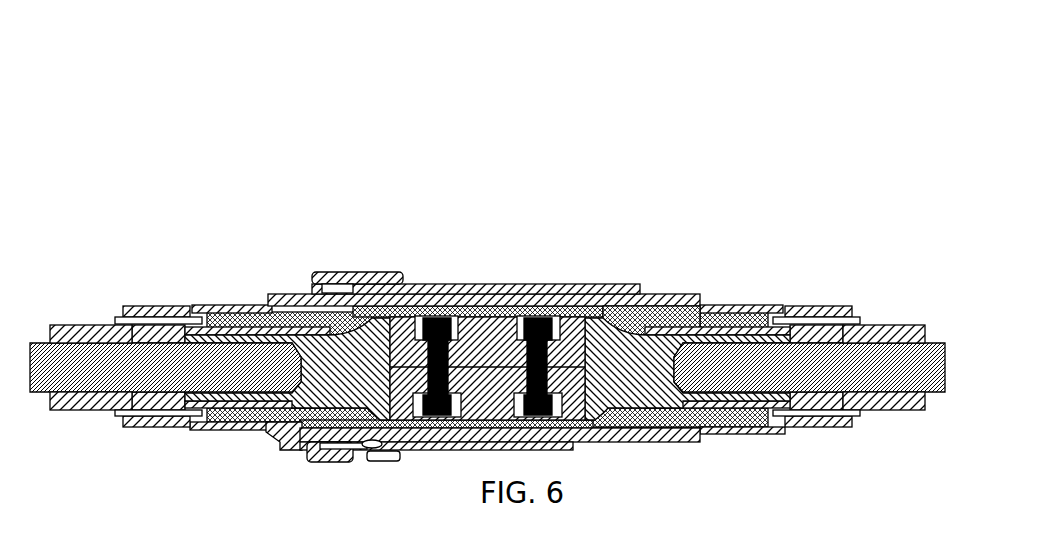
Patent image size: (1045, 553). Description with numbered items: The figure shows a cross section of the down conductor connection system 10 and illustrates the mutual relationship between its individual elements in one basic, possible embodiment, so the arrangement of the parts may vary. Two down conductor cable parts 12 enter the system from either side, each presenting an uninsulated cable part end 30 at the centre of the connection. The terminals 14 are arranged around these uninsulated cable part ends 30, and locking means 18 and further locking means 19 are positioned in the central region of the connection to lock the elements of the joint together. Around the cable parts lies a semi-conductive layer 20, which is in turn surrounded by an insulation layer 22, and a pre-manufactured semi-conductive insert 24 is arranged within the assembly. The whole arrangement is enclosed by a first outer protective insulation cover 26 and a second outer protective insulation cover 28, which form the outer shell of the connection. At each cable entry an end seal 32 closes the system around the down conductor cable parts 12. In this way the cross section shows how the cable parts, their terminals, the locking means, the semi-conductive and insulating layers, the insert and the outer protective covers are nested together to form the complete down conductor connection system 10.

The down conductor connection system 10 is at (314, 147).
The down conductor cable parts 12 is at (60, 337).
The terminals 14 is at (317, 370).
The locking means 18 is at (437, 347).
The locking means 19 is at (388, 370).
The semi-conductive layer 20 is at (167, 337).
The insulation layer 22 is at (243, 310).
The pre-manufactured semi-conductive insert 24 is at (630, 317).
The first outer protective insulation cover 26 is at (330, 278).
The second outer protective insulation cover 28 is at (480, 287).
The uninsulated cable part end 30 is at (270, 370).
The end seal 32 is at (138, 323).